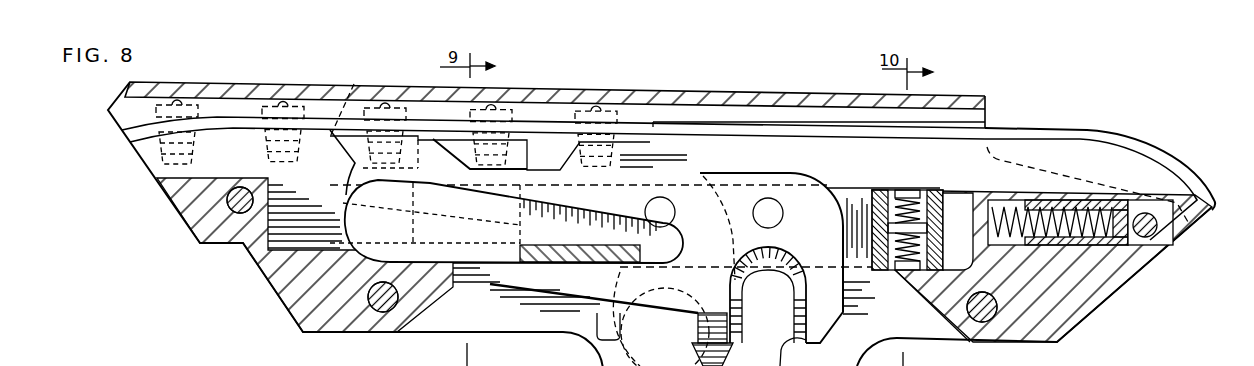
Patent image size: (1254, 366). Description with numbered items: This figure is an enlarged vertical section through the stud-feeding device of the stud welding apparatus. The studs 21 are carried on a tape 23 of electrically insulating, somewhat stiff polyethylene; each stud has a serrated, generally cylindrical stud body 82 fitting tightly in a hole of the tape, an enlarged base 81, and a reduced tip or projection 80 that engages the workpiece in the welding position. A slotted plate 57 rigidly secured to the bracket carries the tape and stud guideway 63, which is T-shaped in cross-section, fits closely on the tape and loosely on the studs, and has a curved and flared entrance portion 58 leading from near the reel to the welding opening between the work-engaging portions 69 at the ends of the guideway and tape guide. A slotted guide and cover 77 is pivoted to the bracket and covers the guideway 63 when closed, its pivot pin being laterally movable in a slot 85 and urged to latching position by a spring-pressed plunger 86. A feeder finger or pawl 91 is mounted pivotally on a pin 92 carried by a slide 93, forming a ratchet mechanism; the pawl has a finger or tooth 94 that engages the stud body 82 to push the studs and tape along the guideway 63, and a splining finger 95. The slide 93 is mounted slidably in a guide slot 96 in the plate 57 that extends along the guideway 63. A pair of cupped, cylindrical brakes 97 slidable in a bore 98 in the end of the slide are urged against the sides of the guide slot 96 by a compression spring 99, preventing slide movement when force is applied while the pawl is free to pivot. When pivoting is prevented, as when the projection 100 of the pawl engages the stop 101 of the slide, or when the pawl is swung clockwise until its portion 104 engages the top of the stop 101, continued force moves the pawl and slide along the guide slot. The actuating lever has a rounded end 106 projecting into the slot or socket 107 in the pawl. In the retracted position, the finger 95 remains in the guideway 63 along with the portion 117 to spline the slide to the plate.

The studs 21 is at (535, 112).
The tape 23 is at (626, 127).
The slotted plate 57 is at (1080, 307).
The curved and flared entrance portion 58 is at (1118, 138).
The tape and stud guideway 63 is at (962, 150).
The work-engaging portions 69 is at (135, 94).
The slotted guide and cover 77 is at (953, 102).
The reduced tip or projection 80 is at (492, 105).
The enlarged base 81 is at (514, 114).
The stud body 82 is at (472, 138).
The slot 85 is at (1140, 216).
The spring-pressed plunger 86 is at (1113, 195).
The feeder finger or pawl 91 is at (630, 193).
The pin 92 is at (772, 208).
The slide 93 is at (887, 188).
The finger or tooth 94 is at (354, 84).
The splining finger 95 is at (542, 155).
The guide slot 96 is at (427, 258).
The cupped, cylindrical brakes 97 is at (942, 191).
The bore 98 is at (893, 275).
The compression spring 99 is at (927, 268).
The projection 100 is at (657, 293).
The stop 101 is at (583, 264).
The portion of the pawl 104 is at (517, 242).
The rounded end 106 is at (800, 347).
The slot or socket 107 is at (800, 293).
The portion 117 is at (767, 177).